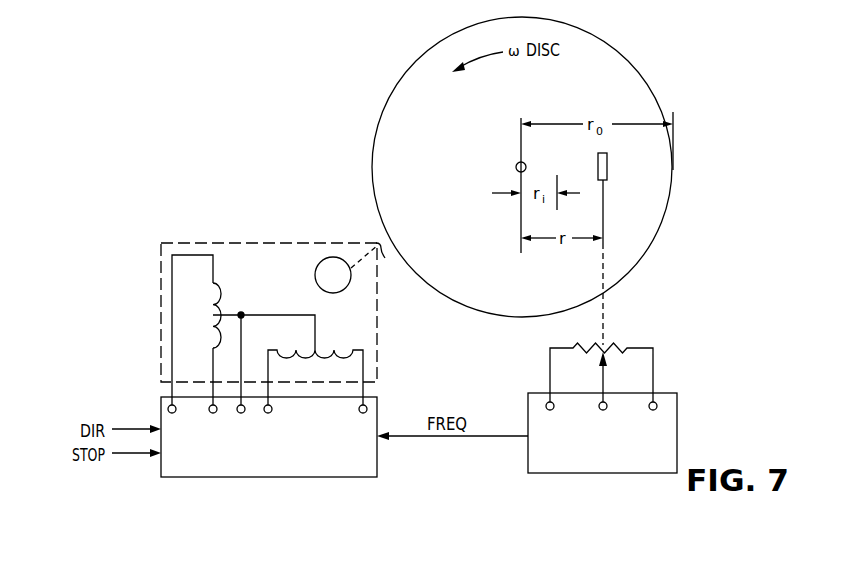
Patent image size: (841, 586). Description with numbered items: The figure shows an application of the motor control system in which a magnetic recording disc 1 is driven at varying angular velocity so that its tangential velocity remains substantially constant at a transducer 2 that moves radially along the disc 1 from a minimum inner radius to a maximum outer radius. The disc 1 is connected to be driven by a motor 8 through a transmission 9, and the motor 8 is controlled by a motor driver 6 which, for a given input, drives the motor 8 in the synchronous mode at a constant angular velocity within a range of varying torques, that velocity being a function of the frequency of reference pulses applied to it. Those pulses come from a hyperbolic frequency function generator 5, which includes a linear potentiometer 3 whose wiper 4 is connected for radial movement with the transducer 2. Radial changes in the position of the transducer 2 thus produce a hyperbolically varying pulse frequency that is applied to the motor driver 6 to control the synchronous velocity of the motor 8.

The magnetic recording disc 1 is at (449, 165).
The transducer 2 is at (607, 170).
The linear potentiometer 3 is at (616, 345).
The wiper 4 is at (603, 378).
The hyperbolic frequency function generator 5 is at (528, 396).
The motor driver 6 is at (372, 412).
The motor 8 is at (275, 273).
The transmission 9 is at (374, 264).